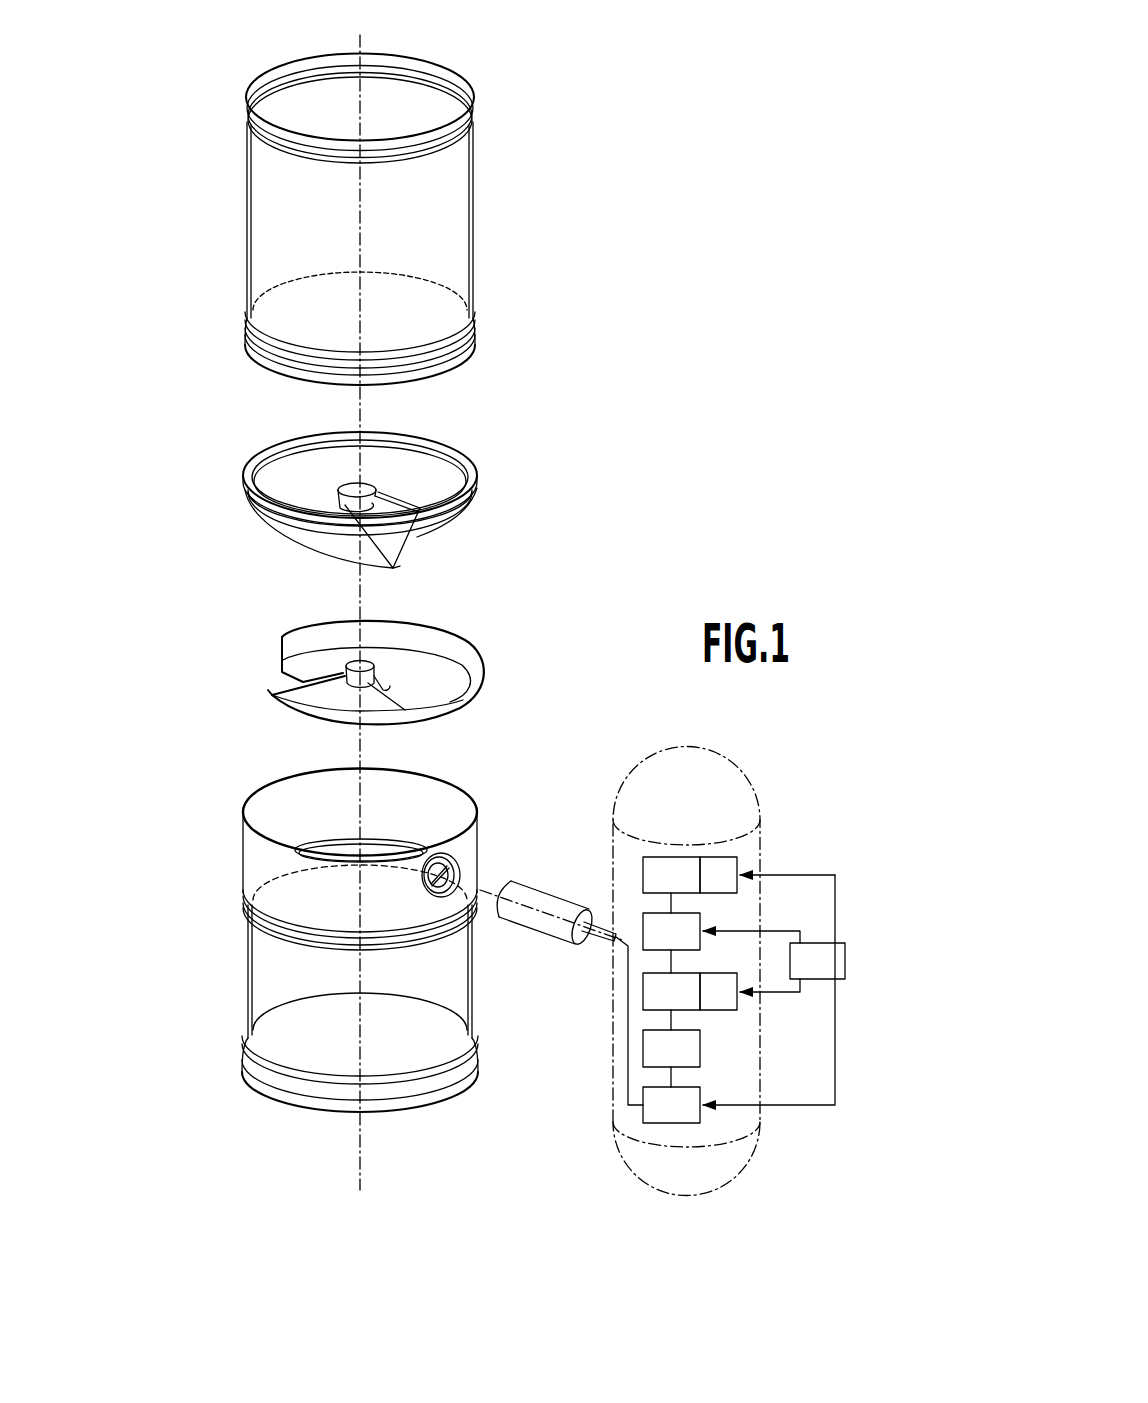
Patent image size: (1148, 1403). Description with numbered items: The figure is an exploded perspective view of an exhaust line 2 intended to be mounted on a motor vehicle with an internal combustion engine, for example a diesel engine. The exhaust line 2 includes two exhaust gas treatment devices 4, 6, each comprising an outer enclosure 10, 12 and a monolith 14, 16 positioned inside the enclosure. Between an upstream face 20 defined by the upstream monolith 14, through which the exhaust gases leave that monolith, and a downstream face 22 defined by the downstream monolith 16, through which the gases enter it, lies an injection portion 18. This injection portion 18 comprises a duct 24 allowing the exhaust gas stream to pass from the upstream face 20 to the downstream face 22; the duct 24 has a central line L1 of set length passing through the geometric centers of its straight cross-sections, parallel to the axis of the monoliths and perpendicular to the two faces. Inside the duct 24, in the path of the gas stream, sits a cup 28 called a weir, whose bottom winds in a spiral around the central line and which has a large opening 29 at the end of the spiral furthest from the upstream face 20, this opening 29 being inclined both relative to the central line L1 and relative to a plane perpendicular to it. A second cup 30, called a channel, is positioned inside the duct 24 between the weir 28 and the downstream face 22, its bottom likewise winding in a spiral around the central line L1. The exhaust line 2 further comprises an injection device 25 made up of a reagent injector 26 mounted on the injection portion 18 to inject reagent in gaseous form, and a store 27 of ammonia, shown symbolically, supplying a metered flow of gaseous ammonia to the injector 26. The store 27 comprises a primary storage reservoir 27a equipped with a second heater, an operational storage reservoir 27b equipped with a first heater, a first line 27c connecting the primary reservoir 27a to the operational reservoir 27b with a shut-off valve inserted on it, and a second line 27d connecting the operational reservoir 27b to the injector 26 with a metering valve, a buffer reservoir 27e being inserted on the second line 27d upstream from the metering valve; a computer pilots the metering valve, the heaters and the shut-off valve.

The exhaust line 2 is at (180, 157).
The exhaust gas treatment device 4 is at (577, 217).
The outer enclosure 10 is at (470, 185).
The monolith 14 is at (470, 246).
The upstream face 20 is at (425, 330).
The central line L1 is at (360, 400).
The injection portion 18 is at (540, 582).
The duct 24 is at (475, 448).
The cup (weir) 28 is at (237, 512).
The opening 29 is at (393, 541).
The second cup (channel) 30 is at (262, 679).
The exhaust gas treatment device 6 is at (160, 955).
The downstream face 22 is at (283, 900).
The monolith 16 is at (253, 950).
The outer enclosure 12 is at (250, 985).
The injection device 25 is at (552, 880).
The reagent injector 26 is at (523, 890).
The store 27 is at (728, 775).
The primary storage reservoir 27a is at (671, 875).
The operational storage reservoir 27b is at (671, 991).
The first line 27c is at (666, 905).
The second line 27d is at (628, 1028).
The buffer reservoir 27e is at (671, 1048).